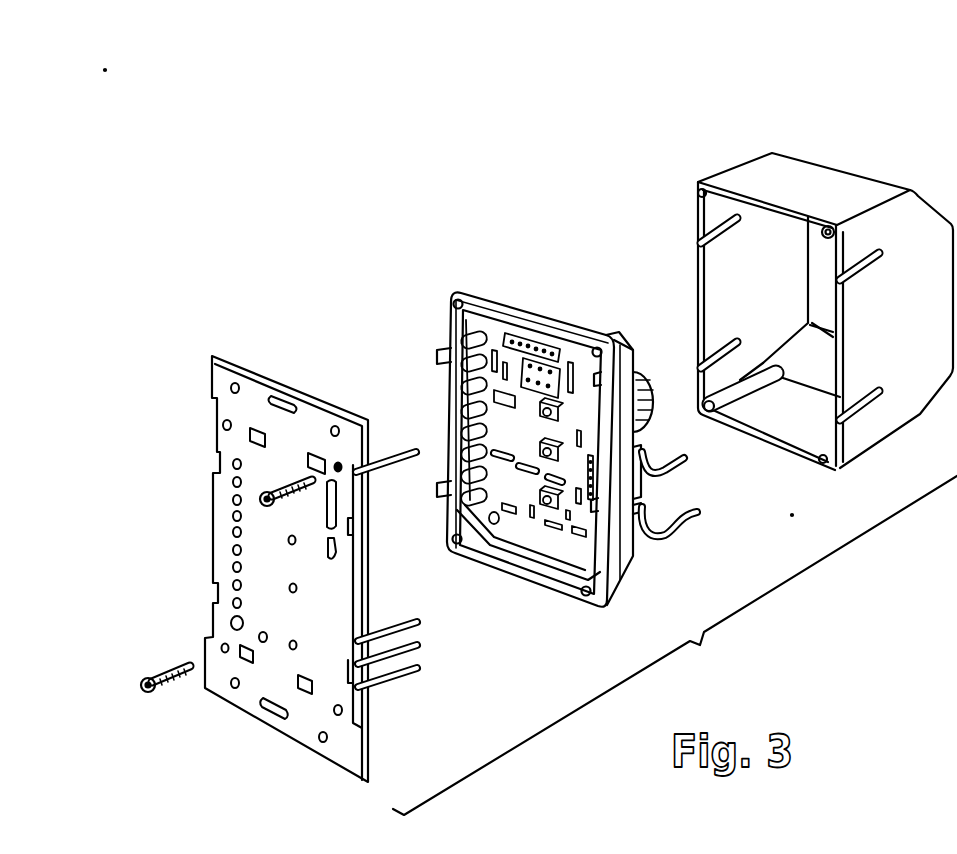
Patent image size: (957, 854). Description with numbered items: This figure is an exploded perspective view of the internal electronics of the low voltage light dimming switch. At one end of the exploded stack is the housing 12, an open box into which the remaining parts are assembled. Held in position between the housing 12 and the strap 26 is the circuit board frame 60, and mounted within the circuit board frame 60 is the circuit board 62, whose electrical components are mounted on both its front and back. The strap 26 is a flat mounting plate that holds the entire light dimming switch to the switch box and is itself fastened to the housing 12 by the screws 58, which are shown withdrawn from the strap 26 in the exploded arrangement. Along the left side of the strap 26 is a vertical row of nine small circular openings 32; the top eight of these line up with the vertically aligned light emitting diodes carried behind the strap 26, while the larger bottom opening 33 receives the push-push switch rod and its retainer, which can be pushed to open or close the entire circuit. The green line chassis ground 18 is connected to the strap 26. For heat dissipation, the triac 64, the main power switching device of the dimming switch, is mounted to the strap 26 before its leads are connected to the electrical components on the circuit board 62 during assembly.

The housing 12 is at (838, 188).
The green line chassis ground 18 is at (393, 467).
The strap 26 is at (297, 393).
The small circular openings 32 is at (233, 467).
The bottom opening 33 is at (230, 625).
The screws 58 is at (263, 493).
The circuit board frame 60 is at (559, 316).
The circuit board 62 is at (537, 533).
The triac 64 is at (363, 640).